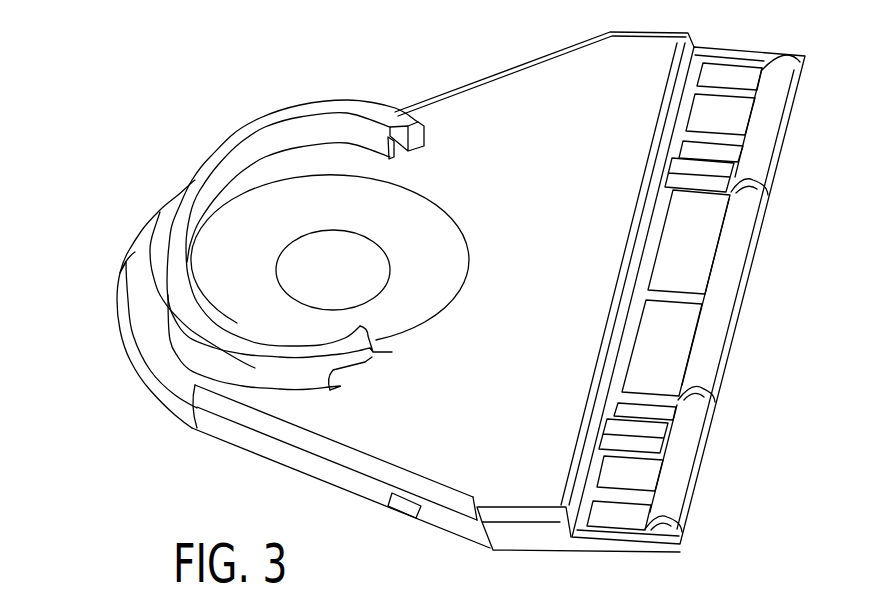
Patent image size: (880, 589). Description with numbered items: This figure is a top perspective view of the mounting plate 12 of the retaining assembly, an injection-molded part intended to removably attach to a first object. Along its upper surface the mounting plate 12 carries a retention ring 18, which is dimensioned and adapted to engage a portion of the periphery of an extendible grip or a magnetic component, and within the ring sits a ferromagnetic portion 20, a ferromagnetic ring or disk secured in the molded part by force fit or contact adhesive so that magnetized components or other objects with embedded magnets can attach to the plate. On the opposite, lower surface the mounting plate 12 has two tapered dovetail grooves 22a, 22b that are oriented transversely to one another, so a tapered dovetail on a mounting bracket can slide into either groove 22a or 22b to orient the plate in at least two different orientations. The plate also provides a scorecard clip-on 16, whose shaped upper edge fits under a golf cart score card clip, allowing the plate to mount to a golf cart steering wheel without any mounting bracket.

The mounting plate 12 is at (740, 493).
The scorecard clip-on 16 is at (737, 230).
The retention ring 18 is at (210, 183).
The ferromagnetic portion 20 is at (420, 292).
The tapered dovetail groove 22a is at (373, 487).
The tapered dovetail groove 22b is at (118, 283).